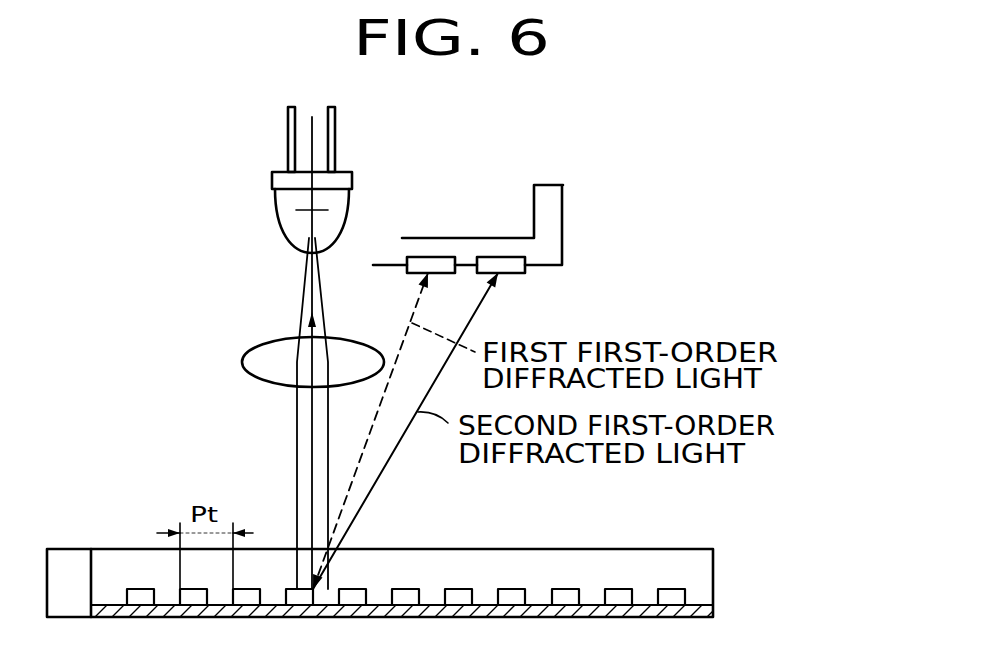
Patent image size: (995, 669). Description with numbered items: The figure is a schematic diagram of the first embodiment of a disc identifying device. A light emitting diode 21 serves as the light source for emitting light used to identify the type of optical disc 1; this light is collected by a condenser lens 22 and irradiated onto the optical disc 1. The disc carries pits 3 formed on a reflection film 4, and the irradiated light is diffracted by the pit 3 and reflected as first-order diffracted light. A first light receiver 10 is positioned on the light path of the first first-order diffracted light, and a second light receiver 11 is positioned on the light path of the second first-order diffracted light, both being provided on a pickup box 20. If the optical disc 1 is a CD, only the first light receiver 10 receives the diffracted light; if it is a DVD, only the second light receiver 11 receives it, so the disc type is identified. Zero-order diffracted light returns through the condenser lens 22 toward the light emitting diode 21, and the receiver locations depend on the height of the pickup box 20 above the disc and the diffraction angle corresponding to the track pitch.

The optical disc 1 is at (520, 560).
The pit 3 is at (675, 589).
The reflection film 4 is at (587, 617).
The first light receiver 10 is at (433, 262).
The second light receiver 11 is at (500, 262).
The pickup box 20 is at (552, 212).
The light emitting diode (LED) 21 is at (272, 183).
The condenser lens 22 is at (262, 348).